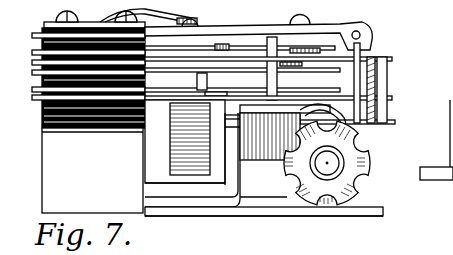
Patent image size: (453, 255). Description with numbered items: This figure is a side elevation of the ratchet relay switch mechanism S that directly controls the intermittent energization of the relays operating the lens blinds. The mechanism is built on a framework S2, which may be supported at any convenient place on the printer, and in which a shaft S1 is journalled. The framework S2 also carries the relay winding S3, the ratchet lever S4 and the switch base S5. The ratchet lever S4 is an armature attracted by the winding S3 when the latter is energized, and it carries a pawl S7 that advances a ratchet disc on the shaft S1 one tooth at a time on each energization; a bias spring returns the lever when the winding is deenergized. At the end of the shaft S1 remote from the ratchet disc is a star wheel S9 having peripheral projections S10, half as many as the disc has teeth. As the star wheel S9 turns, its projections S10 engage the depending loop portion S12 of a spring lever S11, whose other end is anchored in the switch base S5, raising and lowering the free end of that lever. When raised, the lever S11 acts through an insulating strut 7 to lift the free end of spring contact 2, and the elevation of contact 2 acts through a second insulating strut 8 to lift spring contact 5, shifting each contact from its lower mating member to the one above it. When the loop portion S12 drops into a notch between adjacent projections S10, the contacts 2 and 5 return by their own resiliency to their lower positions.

The ratchet relay switch mechanism S is at (222, 224).
The shaft S1 is at (287, 195).
The framework S2 is at (272, 216).
The relay winding S3 is at (162, 155).
The ratchet lever S4 is at (235, 28).
The switch base S5 is at (95, 179).
The pawl S7 is at (365, 58).
The star wheel S9 is at (346, 187).
The peripheral projections S10 is at (362, 160).
The spring lever S11 is at (392, 122).
The loop portion S12 is at (270, 147).
The contact 2 is at (388, 97).
The contact 5 is at (391, 60).
The strut 7 is at (388, 108).
The second insulation strut 8 is at (388, 75).